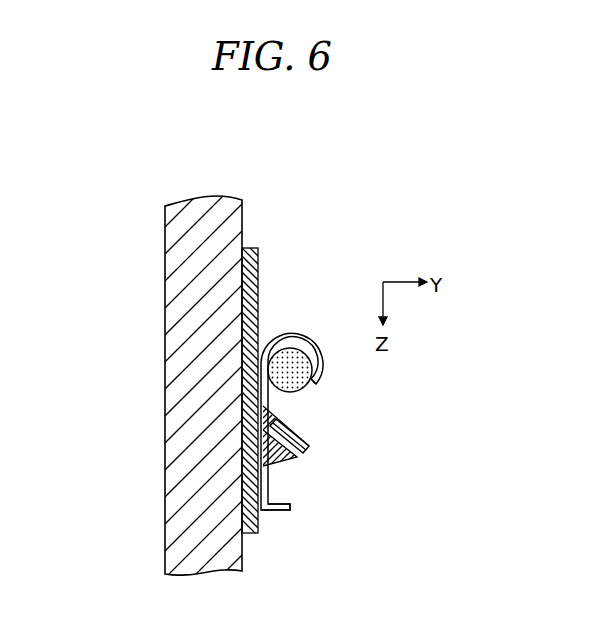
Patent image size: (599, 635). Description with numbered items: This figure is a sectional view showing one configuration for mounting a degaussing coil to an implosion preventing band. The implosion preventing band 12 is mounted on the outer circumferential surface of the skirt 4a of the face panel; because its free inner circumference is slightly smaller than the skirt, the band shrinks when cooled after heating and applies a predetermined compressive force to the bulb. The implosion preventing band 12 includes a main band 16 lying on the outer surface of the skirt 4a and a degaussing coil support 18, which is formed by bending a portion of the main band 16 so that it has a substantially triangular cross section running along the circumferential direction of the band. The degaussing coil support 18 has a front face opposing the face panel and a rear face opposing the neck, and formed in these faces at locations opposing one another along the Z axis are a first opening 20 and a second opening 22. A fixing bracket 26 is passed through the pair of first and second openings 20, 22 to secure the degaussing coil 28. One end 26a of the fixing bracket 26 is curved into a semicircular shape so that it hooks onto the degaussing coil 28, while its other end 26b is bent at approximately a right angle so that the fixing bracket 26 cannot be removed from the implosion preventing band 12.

The skirt 4a is at (175, 289).
The implosion preventing band 12 is at (262, 262).
The main band 16 is at (260, 306).
The degaussing coil support 18 is at (304, 449).
The first opening 20 is at (252, 408).
The second opening 22 is at (252, 487).
The fixing bracket 26 is at (300, 425).
The one end of the fixing bracket 26a is at (322, 378).
The other end of the fixing bracket 26b is at (291, 511).
The degaussing coil 28 is at (304, 352).